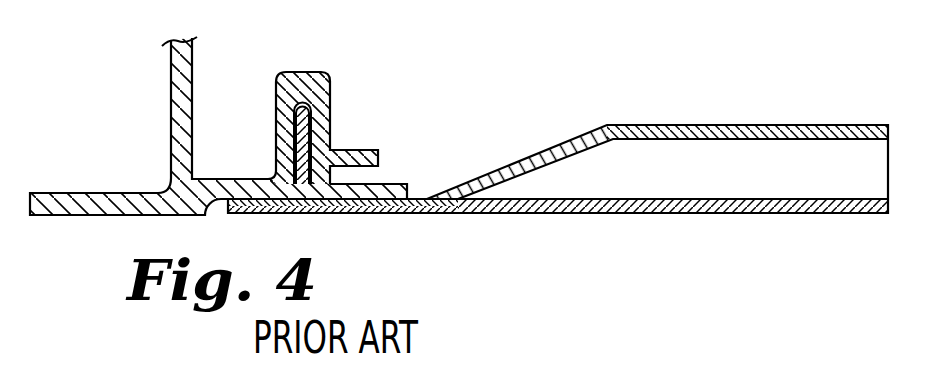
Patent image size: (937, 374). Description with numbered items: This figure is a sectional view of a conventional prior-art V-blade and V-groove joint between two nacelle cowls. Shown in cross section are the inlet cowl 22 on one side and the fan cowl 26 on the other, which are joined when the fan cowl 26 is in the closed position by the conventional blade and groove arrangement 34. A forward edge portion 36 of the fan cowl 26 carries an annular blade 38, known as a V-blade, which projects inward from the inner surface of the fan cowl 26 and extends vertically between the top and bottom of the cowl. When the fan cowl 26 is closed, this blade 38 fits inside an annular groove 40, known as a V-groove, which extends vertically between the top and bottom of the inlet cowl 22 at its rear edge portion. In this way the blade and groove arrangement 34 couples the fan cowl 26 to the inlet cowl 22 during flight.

The inlet cowl 22 is at (84, 215).
The fan cowl 26 is at (555, 214).
The blade and groove arrangement 34 is at (331, 82).
The forward edge portion 36 is at (298, 214).
The annular blade 38 is at (306, 136).
The annular groove 40 is at (298, 103).